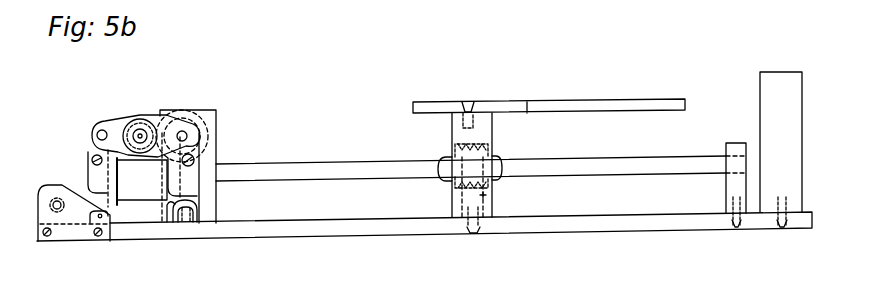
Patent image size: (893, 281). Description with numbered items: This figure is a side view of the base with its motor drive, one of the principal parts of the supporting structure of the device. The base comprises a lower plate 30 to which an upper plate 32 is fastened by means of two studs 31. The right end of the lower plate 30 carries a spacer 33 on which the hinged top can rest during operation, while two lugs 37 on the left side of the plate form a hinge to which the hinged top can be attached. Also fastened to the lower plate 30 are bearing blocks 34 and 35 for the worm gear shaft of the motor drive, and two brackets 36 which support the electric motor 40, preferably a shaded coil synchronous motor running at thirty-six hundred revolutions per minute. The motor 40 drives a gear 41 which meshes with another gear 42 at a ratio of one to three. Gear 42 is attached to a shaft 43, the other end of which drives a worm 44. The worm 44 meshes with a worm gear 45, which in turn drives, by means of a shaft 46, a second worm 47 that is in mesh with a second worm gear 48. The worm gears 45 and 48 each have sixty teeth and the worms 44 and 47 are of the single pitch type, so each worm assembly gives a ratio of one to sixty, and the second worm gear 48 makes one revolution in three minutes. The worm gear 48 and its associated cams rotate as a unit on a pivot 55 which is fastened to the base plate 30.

The lower plate 30 is at (613, 224).
The studs 31 is at (453, 128).
The upper plate 32 is at (586, 100).
The spacer 33 is at (766, 80).
The bearing block 34 is at (737, 143).
The bearing block 35 is at (215, 111).
The brackets 36 is at (93, 193).
The lugs 37 is at (70, 229).
The motor 40 is at (92, 131).
The gear 41 is at (129, 117).
The gear 42 is at (190, 107).
The shaft 43 is at (194, 134).
The worm 44 is at (197, 110).
The worm gear 45 is at (198, 207).
The shaft 46 is at (339, 172).
The second worm 47 is at (456, 193).
The second worm gear 48 is at (497, 158).
The pivot 55 is at (488, 195).